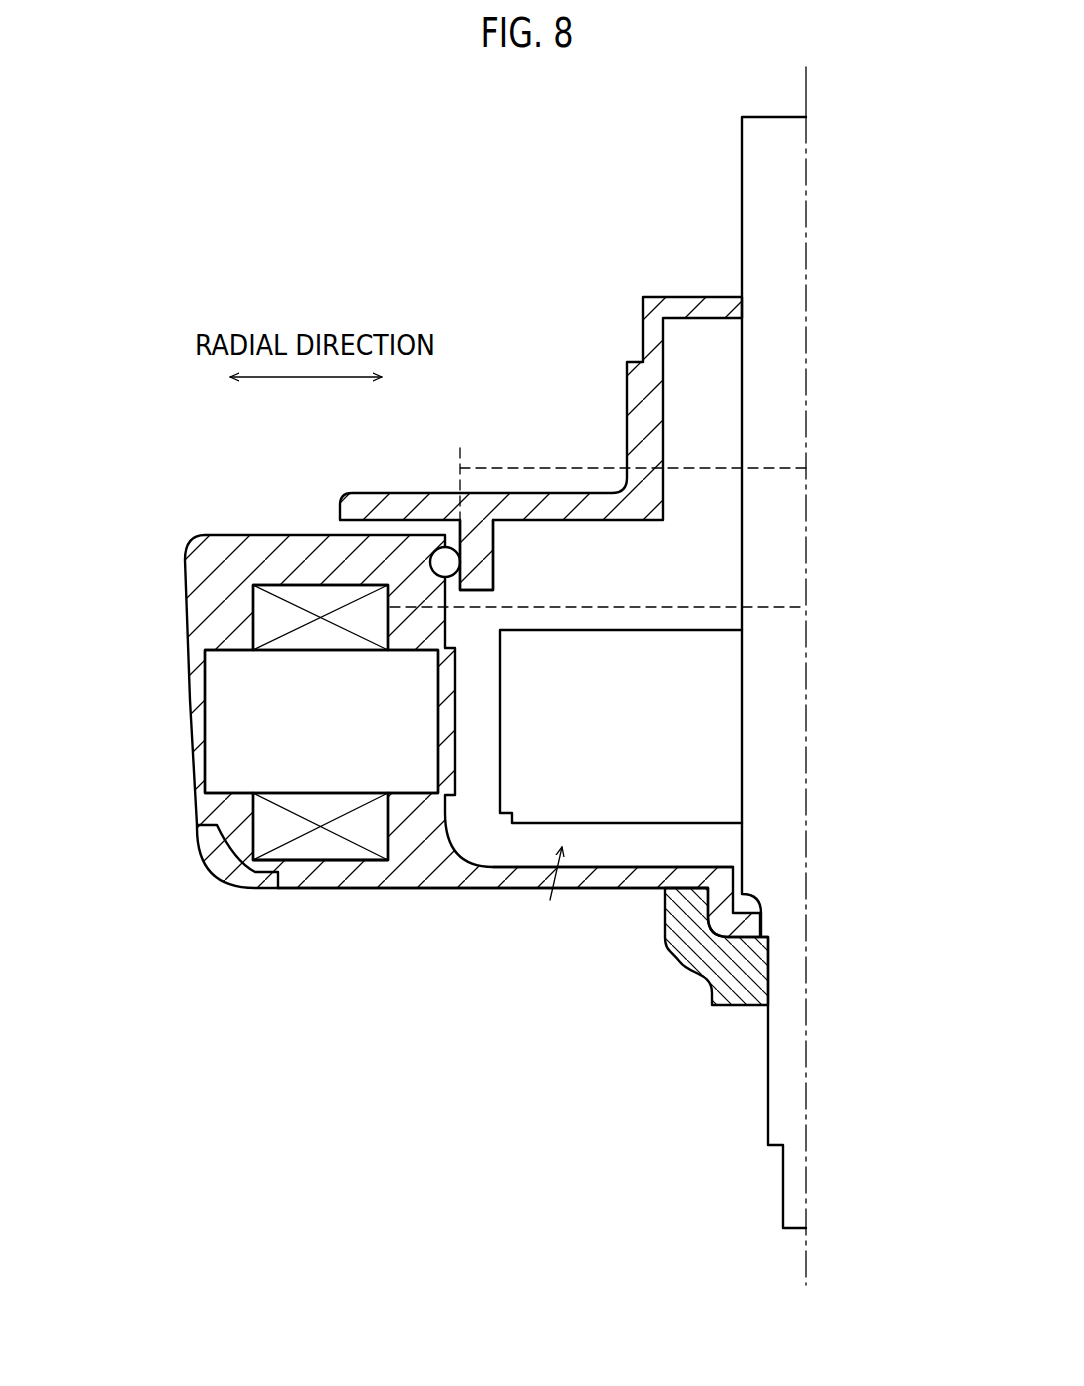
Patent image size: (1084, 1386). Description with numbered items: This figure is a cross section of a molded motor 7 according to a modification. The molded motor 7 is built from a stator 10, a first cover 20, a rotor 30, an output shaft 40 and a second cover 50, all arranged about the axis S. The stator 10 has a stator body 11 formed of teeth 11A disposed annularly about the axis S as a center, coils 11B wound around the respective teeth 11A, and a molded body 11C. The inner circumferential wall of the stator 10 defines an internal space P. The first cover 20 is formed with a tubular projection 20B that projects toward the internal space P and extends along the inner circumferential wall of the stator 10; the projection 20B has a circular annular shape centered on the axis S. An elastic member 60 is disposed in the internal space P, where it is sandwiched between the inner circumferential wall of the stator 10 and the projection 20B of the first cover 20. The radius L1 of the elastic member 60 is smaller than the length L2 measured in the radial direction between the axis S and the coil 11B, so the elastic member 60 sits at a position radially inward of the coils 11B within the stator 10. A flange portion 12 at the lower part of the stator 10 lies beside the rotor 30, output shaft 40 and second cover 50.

The molded motor 7 is at (893, 90).
The stator 10 is at (422, 748).
The stator body 11 is at (333, 805).
The teeth 11A is at (403, 760).
The coils 11B is at (333, 638).
The molded body 11C is at (320, 920).
The flange portion 12 is at (468, 884).
The first cover 20 is at (541, 443).
The tubular projection 20B is at (488, 562).
The rotor 30 is at (712, 746).
The output shaft 40 is at (762, 165).
The second cover 50 is at (223, 860).
The elastic member 60 is at (443, 548).
The radius of elastic member L1 is at (808, 468).
The length between axis and coil L2 is at (808, 607).
The internal space P is at (547, 914).
The axis S is at (805, 679).